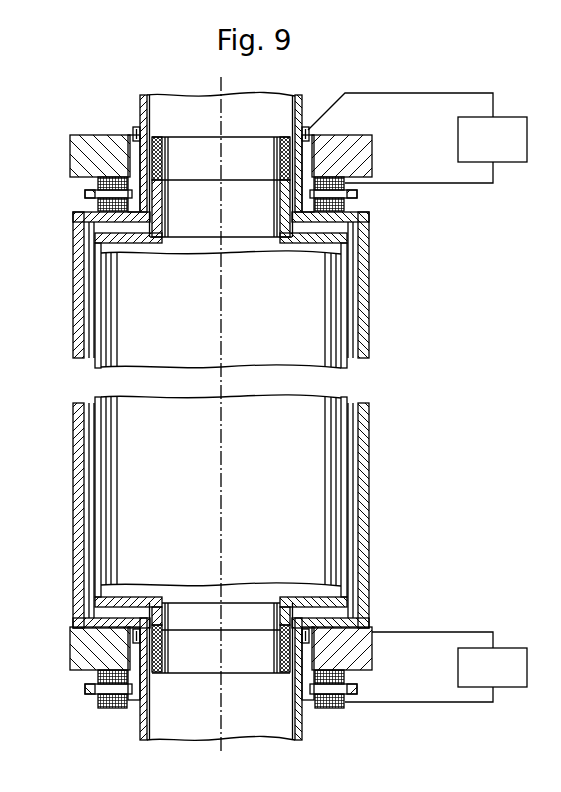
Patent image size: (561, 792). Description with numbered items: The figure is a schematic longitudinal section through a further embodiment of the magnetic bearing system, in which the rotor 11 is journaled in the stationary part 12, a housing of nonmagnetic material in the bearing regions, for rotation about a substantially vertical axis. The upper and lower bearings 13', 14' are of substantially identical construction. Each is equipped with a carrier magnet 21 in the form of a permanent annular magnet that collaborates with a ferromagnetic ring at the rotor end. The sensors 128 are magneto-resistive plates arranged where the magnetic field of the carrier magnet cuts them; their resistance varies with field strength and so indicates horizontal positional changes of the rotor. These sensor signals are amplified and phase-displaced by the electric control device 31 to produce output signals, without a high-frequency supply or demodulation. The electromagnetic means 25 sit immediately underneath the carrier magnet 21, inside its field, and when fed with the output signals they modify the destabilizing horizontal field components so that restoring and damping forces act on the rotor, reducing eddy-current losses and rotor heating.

The rotor 11 is at (320, 452).
The stationary part 12 is at (366, 303).
The upper bearing 13' is at (245, 149).
The lower bearing 14' is at (250, 679).
The carrier magnet 21 is at (372, 150).
The electromagnetic means 25 is at (363, 202).
The electric control device 31 is at (511, 117).
The sensors 128 is at (310, 128).